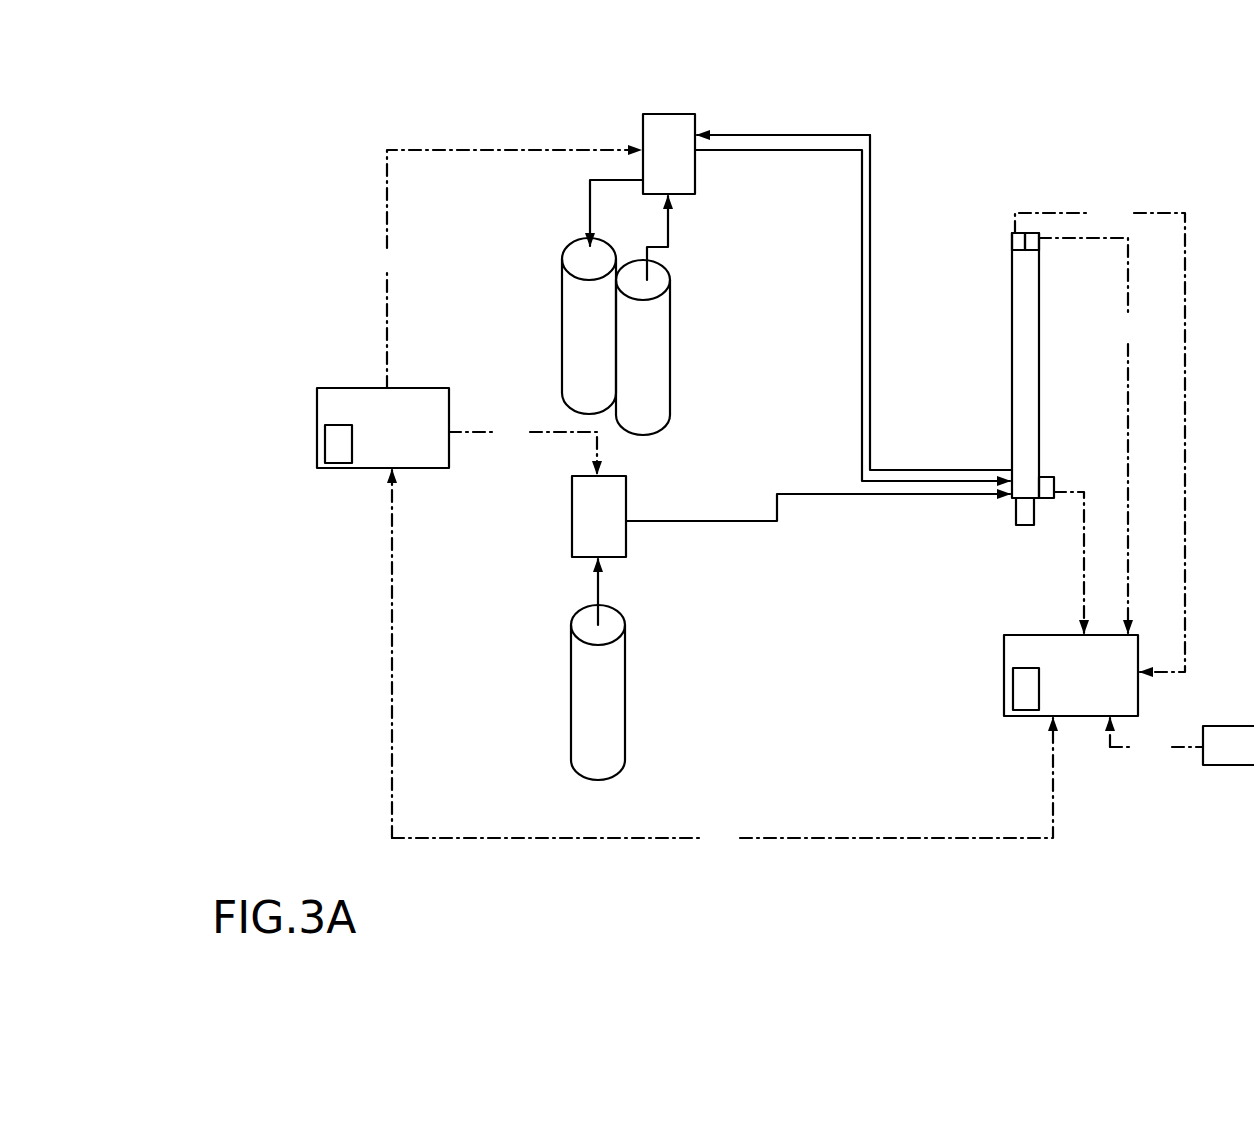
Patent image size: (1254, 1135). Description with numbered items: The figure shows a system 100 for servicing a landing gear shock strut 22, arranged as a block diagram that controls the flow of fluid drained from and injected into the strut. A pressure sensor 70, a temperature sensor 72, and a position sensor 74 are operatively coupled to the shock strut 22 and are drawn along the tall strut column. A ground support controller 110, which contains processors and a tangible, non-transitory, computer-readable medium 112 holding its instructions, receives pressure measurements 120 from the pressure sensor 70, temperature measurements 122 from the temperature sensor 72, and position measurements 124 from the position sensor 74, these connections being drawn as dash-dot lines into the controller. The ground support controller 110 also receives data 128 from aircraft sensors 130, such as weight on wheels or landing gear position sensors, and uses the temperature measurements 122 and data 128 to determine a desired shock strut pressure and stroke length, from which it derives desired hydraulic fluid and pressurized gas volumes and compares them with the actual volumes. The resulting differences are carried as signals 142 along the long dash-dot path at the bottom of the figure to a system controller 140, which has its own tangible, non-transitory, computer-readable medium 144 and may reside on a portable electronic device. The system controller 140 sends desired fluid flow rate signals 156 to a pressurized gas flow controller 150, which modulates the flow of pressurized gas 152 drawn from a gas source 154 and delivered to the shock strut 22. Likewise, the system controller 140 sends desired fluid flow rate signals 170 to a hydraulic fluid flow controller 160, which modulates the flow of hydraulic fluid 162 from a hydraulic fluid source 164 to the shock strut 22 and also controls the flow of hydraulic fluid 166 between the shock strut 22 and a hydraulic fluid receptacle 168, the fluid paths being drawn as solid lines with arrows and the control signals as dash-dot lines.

The system 100 is at (222, 155).
The shock strut 22 is at (988, 331).
The pressure sensor 70 is at (1013, 241).
The temperature sensor 72 is at (1036, 244).
The position sensor 74 is at (1046, 485).
The ground support controller 110 is at (1057, 690).
The tangible, non-transitory, computer-readable medium 112 is at (1020, 695).
The pressure measurements 120 is at (1100, 435).
The temperature measurements 122 is at (1093, 435).
The position measurements 124 is at (1075, 562).
The data 128 is at (1156, 739).
The aircraft sensors 130 is at (1215, 760).
The system controller 140 is at (366, 435).
The signals 142 is at (722, 661).
The tangible, non-transitory, computer-readable medium 144 is at (334, 451).
The pressurized gas flow controller 150 is at (582, 527).
The pressurized gas 152 is at (600, 592).
The gas source 154 is at (581, 713).
The desired fluid flow rate signals 156 is at (523, 446).
The hydraulic fluid flow controller 160 is at (652, 165).
The hydraulic fluid 162 is at (782, 152).
The hydraulic fluid source 164 is at (626, 353).
The hydraulic fluid 166 is at (872, 158).
The hydraulic fluid receptacle 168 is at (572, 348).
The desired fluid flow rate signals 170 is at (505, 269).